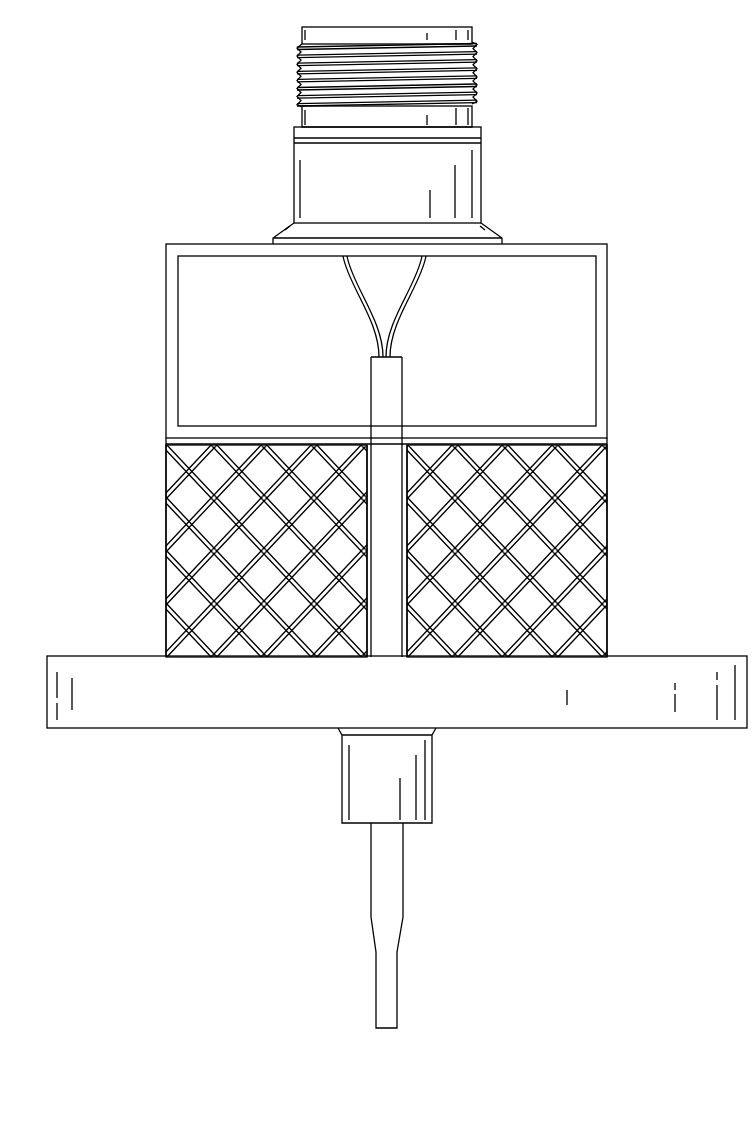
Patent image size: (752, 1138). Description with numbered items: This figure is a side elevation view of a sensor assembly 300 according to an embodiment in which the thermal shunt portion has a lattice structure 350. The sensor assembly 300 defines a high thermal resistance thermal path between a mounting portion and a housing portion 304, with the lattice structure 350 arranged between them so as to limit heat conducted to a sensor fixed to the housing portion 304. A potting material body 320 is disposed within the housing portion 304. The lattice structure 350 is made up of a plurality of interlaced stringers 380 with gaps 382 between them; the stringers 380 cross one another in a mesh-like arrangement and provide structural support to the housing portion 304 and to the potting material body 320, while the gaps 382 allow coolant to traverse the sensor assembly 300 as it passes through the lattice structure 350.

The sensor assembly 300 is at (60, 888).
The housing portion 304 is at (118, 332).
The potting material body 320 is at (533, 290).
The lattice structure 350 is at (650, 437).
The interlaced stringers 380 is at (542, 560).
The gaps 382 is at (558, 577).